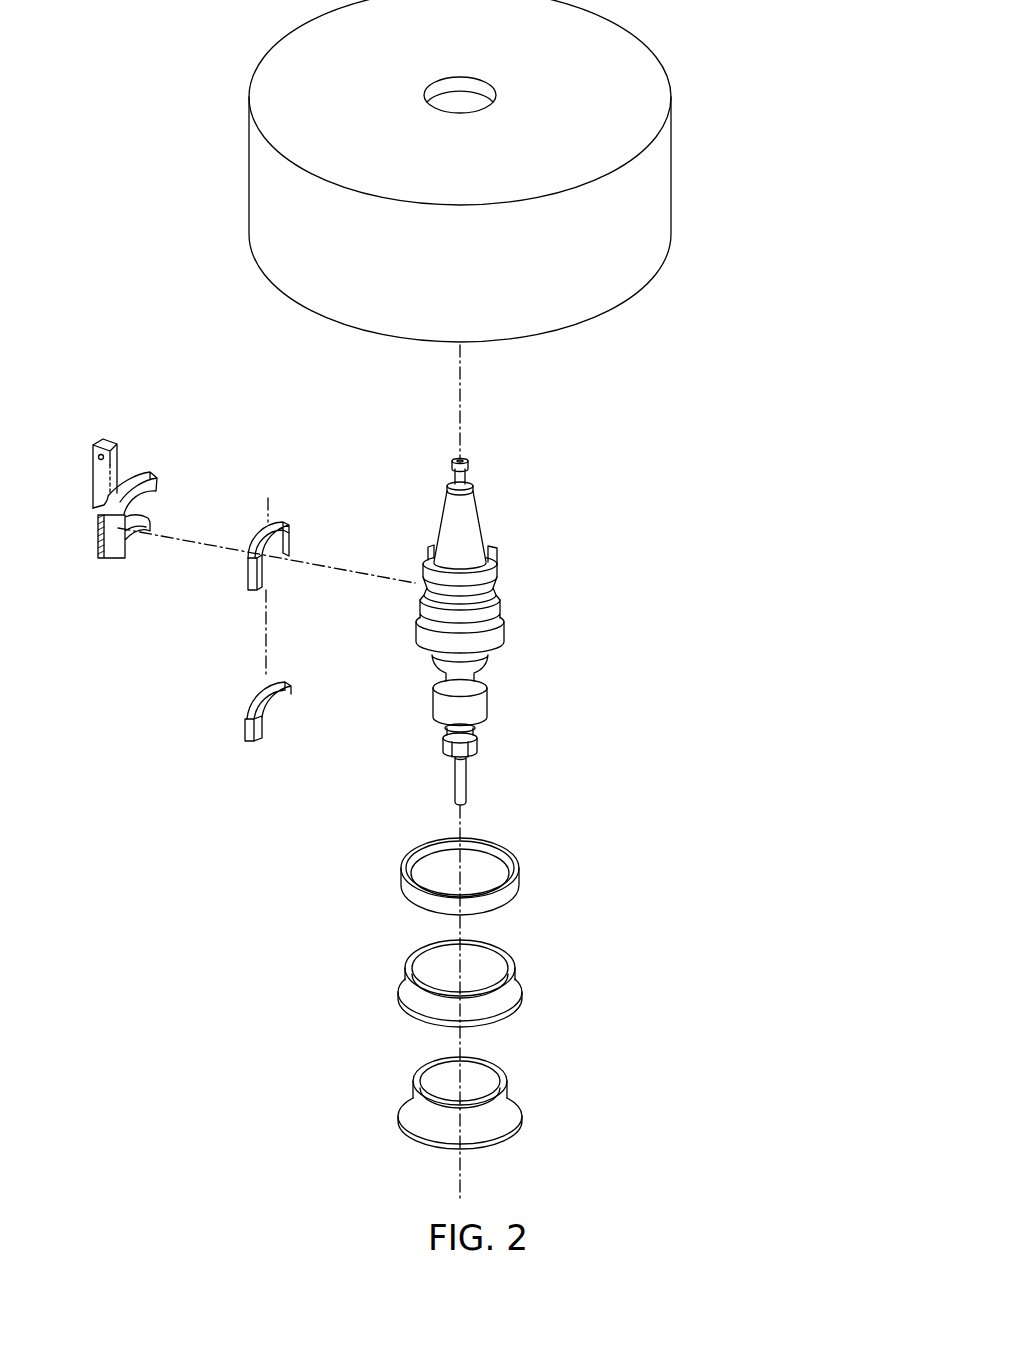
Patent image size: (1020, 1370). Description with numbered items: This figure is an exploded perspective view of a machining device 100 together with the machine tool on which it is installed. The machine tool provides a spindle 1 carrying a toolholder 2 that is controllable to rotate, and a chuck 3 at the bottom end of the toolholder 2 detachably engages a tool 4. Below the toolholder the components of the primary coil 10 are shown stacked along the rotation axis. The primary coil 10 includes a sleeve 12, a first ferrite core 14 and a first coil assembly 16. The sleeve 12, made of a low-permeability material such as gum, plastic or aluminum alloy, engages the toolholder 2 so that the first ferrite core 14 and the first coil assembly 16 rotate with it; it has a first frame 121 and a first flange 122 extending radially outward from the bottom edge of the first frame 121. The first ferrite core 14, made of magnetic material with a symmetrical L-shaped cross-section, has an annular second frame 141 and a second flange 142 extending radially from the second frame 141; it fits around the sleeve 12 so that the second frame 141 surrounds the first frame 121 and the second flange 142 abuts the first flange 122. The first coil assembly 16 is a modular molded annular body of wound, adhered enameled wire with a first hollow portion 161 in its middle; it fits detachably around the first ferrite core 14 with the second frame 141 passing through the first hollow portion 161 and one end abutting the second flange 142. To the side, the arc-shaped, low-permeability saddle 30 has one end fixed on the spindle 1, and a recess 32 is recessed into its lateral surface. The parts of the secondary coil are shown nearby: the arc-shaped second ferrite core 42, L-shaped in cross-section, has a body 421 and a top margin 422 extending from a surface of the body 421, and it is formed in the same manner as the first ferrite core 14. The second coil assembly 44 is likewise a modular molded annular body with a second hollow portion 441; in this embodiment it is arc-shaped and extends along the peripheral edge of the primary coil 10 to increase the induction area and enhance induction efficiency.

The spindle 1 is at (653, 190).
The toolholder 2 is at (467, 520).
The chuck 3 is at (477, 735).
The tool 4 is at (463, 783).
The primary coil 10 is at (701, 903).
The machining device 100 is at (360, 1051).
The sleeve 12 is at (605, 1151).
The first frame 121 is at (505, 1085).
The first flange 122 is at (517, 1132).
The first ferrite core 14 is at (585, 1002).
The second frame 141 is at (513, 965).
The second flange 142 is at (520, 1013).
The first coil assembly 16 is at (463, 876).
The first hollow portion 161 is at (433, 875).
The saddle 30 is at (105, 490).
The recess 32 is at (118, 555).
The second ferrite core 42 is at (254, 537).
The body 421 is at (250, 578).
The top margin 422 is at (274, 523).
The second coil assembly 44 is at (251, 729).
The second hollow portion 441 is at (250, 705).